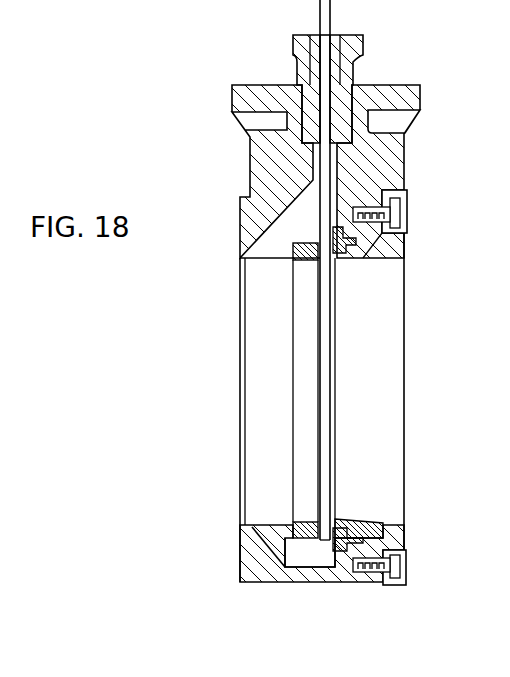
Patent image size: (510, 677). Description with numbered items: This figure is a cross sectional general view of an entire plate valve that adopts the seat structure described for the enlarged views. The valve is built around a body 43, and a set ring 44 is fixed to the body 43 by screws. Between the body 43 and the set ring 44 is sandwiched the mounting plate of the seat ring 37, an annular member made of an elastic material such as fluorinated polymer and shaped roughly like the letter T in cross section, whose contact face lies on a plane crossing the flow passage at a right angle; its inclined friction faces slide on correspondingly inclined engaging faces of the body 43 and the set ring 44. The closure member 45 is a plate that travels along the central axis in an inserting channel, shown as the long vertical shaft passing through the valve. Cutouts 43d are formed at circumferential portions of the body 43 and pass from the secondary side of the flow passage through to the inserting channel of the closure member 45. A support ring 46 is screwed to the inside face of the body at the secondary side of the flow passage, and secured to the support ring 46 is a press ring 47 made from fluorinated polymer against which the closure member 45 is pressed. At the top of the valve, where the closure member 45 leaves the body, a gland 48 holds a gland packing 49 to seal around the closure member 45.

The seat ring 37 is at (335, 254).
The body 43 is at (272, 567).
The cutouts 43d is at (307, 553).
The set ring 44 is at (373, 523).
The closure member 45 is at (325, 362).
The support ring 46 is at (293, 528).
The press ring 47 is at (315, 253).
The gland 48 is at (293, 50).
The gland packing 49 is at (308, 124).